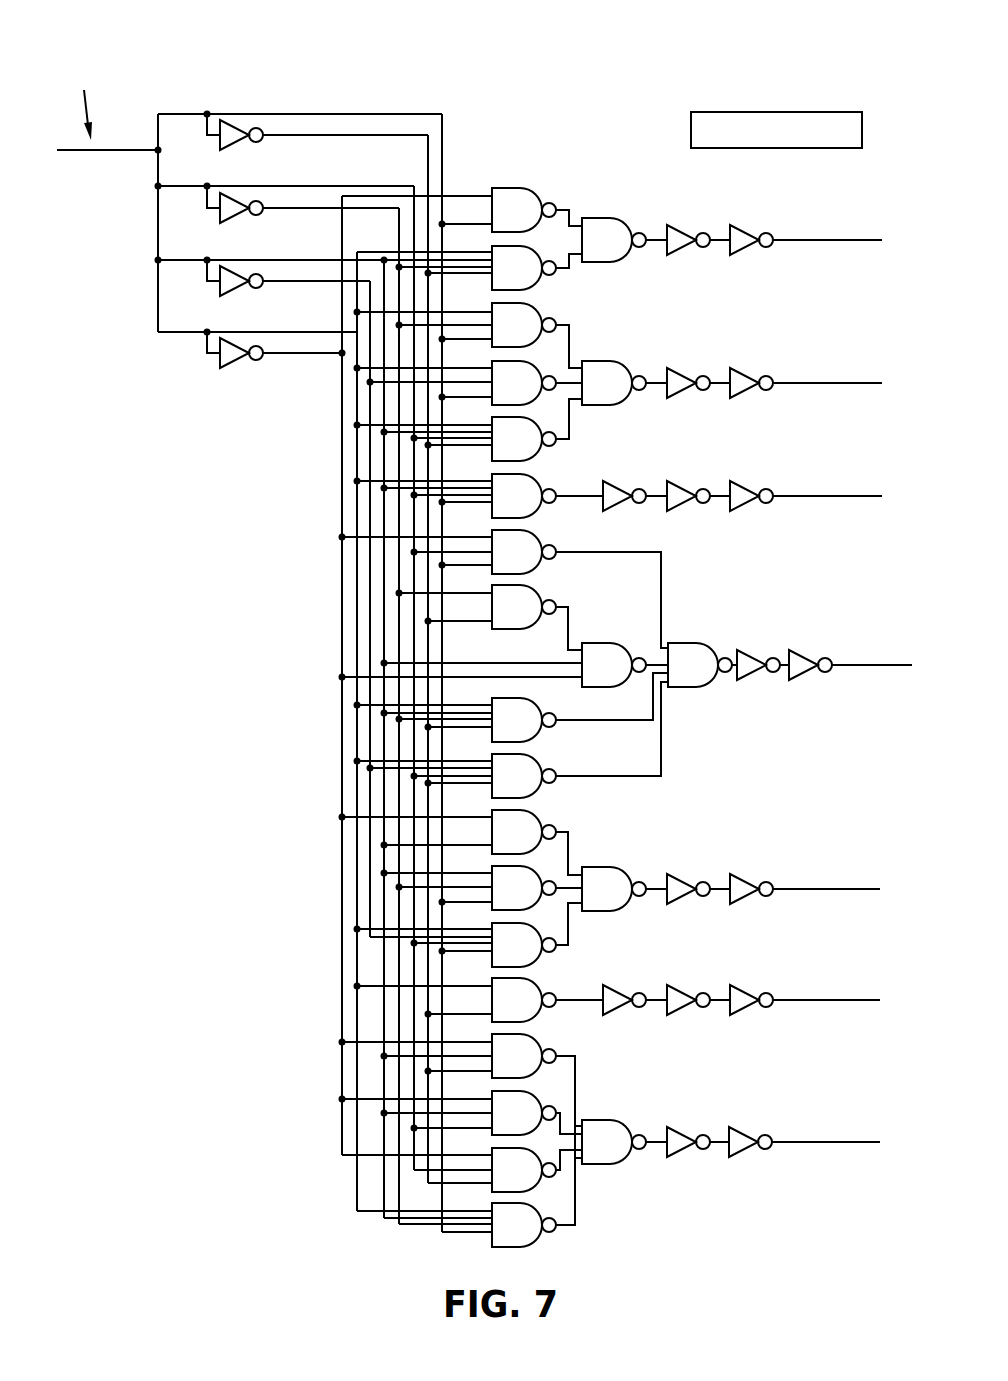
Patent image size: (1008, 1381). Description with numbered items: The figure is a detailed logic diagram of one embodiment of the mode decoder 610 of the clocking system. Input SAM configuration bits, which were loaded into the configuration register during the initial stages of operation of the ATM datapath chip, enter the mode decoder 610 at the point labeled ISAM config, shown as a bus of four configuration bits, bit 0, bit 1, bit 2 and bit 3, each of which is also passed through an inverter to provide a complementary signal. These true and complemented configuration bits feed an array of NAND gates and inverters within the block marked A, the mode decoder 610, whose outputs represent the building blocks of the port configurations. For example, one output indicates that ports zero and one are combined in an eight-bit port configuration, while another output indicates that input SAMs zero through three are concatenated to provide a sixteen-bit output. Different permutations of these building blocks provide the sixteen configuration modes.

The mode decoder 610 is at (552, 78).
The configuration input CFQ 0 is at (300, 116).
The configuration input CFQ 1 is at (286, 190).
The configuration input CFQ 2 is at (325, 262).
The configuration input CFQ 3 is at (257, 334).
The mode decoder block A is at (776, 147).